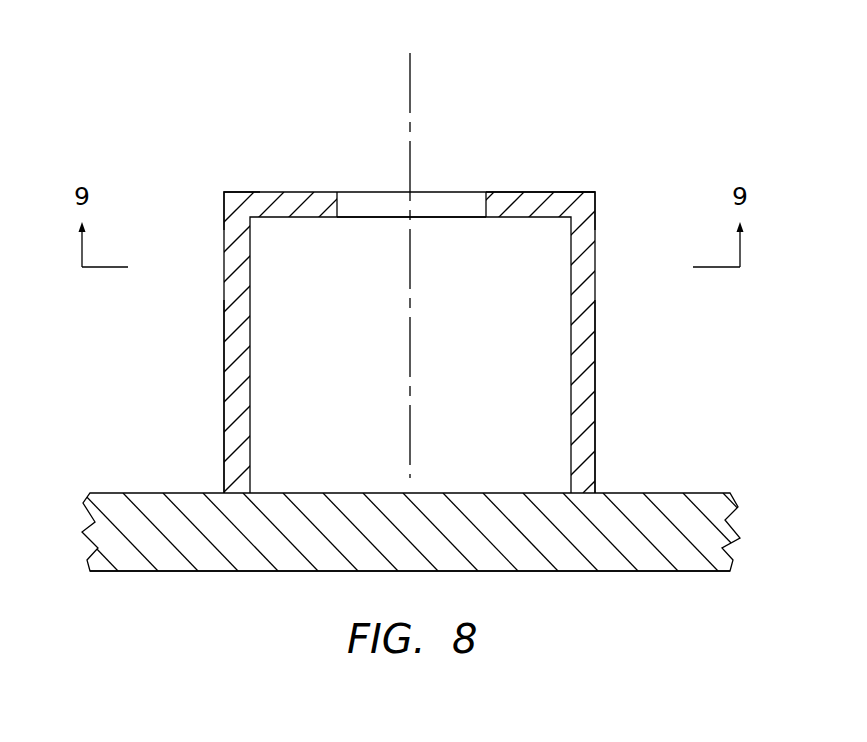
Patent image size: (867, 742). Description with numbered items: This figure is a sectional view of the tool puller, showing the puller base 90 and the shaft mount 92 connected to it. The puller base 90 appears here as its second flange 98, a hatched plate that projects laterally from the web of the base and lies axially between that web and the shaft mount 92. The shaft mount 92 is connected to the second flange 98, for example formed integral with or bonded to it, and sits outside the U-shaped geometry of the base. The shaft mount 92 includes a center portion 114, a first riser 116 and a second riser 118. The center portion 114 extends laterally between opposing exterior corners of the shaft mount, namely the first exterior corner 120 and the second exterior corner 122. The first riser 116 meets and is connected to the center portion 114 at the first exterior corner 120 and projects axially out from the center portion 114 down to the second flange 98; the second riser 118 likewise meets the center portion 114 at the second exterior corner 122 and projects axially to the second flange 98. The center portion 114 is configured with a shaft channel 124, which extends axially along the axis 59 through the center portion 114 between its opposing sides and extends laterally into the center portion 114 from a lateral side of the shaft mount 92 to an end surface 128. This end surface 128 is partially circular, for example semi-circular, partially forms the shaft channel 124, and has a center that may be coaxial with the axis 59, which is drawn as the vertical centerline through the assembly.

The axis 59 is at (410, 78).
The puller base 90 is at (693, 492).
The shaft mount 92 is at (617, 160).
The second flange 98 is at (667, 572).
The center portion 114 is at (532, 191).
The first riser 116 is at (225, 382).
The second riser 118 is at (600, 352).
The first exterior corner 120 is at (224, 192).
The second exterior corner 122 is at (595, 192).
The shaft channel 124 is at (457, 192).
The end surface 128 is at (372, 192).